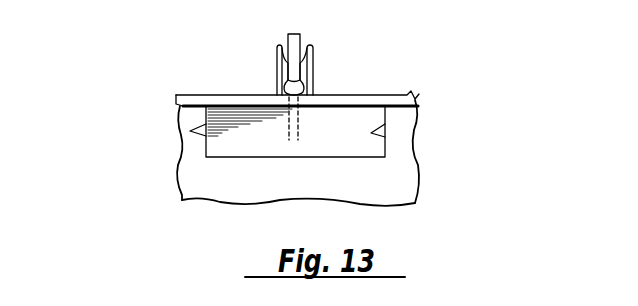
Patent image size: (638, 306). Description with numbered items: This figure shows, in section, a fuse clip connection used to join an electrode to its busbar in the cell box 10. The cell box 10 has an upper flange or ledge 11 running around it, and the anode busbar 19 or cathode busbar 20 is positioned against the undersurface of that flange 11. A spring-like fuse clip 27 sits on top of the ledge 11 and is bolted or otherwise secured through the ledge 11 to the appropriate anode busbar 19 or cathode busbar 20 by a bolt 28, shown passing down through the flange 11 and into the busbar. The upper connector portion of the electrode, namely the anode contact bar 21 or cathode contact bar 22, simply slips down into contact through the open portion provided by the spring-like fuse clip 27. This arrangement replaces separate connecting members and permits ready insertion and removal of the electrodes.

The cell box 10 is at (418, 145).
The upper flange 11 is at (408, 94).
The anode busbar 19 is at (222, 144).
The cathode busbar 20 is at (206, 155).
The anode contact bar 21 is at (231, 41).
The cathode contact bar 22 is at (287, 35).
The fuse clip 27 is at (315, 60).
The bolt 28 is at (290, 138).